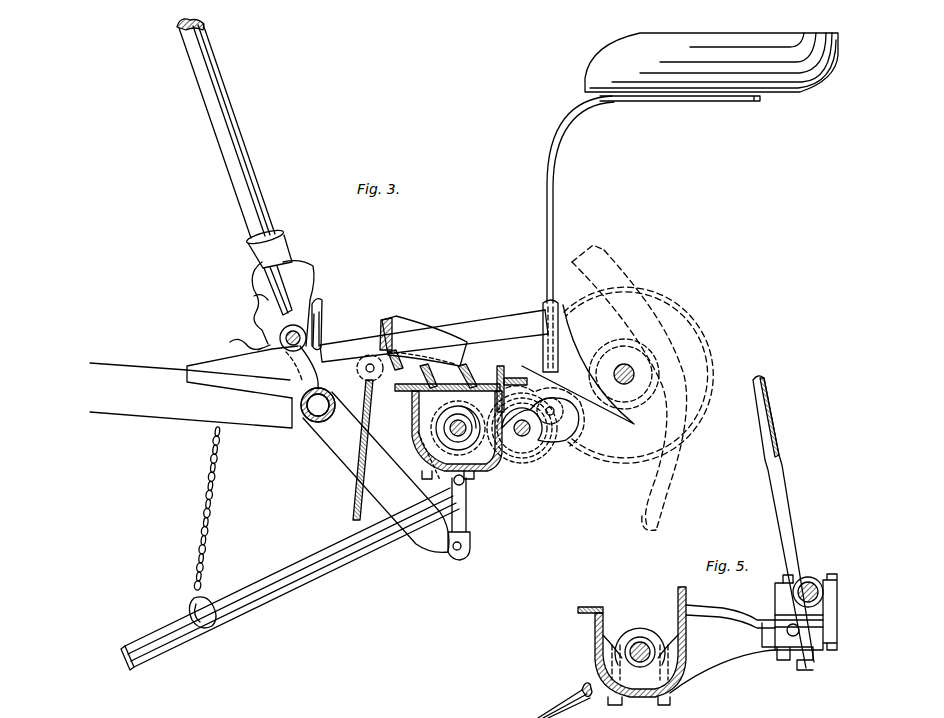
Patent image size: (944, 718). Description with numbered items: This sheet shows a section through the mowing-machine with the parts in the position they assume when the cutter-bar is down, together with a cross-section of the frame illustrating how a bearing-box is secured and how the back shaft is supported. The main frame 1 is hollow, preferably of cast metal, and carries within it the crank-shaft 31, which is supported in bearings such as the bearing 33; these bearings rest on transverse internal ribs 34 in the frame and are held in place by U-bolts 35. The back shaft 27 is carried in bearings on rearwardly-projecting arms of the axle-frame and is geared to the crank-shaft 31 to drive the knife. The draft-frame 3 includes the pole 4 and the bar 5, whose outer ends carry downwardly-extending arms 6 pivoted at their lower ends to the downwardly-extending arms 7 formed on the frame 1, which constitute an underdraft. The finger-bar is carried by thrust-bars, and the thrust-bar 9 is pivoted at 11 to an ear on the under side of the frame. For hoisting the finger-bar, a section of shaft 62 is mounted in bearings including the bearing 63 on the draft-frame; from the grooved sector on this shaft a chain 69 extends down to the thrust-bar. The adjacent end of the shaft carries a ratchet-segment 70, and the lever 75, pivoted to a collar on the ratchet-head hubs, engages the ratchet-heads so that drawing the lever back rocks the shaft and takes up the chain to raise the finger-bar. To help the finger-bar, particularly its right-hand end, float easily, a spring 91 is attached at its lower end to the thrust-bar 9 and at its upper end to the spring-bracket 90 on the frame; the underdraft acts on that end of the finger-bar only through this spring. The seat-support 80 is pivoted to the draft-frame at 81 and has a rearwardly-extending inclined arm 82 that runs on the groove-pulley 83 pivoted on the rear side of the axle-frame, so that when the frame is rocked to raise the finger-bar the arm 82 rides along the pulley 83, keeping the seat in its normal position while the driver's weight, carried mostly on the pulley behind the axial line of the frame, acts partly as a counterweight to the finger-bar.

In FIG. 3, the main frame 1 is at (412, 418).
In FIG. 5, the main frame 1 is at (595, 630).
In FIG. 3, the draft-frame 3 is at (343, 347).
In FIG. 3, the pole 4 is at (191, 395).
In FIG. 3, the bar 5 is at (310, 420).
In FIG. 3, the downwardly-extending arms 6 is at (356, 462).
In FIG. 3, the downwardly-extending arms 7 is at (470, 506).
In FIG. 3, the thrust-bar 9 is at (293, 578).
In FIG. 3, the pivot 11 is at (466, 480).
In FIG. 3, the back shaft 27 is at (634, 374).
In FIG. 5, the back shaft 27 is at (812, 586).
In FIG. 3, the crank-shaft 31 is at (454, 432).
In FIG. 3, the bearing 33 is at (456, 420).
In FIG. 5, the transverse internal ribs 34 is at (605, 655).
In FIG. 5, the U-bolts 35 is at (628, 633).
In FIG. 3, the section of shaft 62 is at (286, 336).
In FIG. 3, the bearing 63 is at (296, 364).
In FIG. 3, the chains 69 is at (214, 490).
In FIG. 3, the ratchet-segment 70 is at (303, 292).
In FIG. 3, the lever 75 is at (276, 254).
In FIG. 5, the lever 75 is at (538, 712).
In FIG. 3, the seat-support 80 is at (495, 337).
In FIG. 3, the pivot 81 is at (373, 365).
In FIG. 3, the inclined arm 82 is at (572, 362).
In FIG. 3, the groove-pulley 83 is at (562, 446).
In FIG. 3, the spring-bracket 90 is at (392, 330).
In FIG. 3, the spring 91 is at (356, 502).